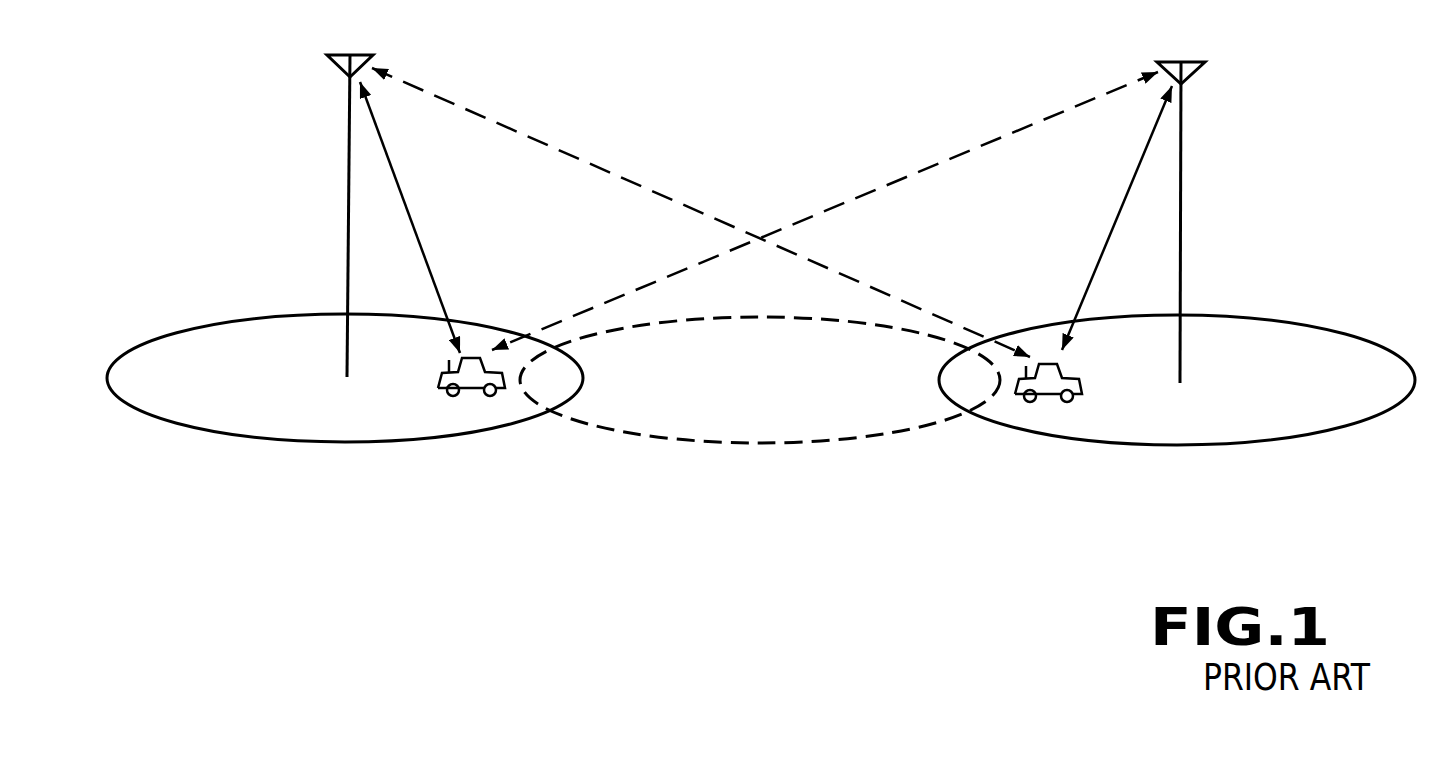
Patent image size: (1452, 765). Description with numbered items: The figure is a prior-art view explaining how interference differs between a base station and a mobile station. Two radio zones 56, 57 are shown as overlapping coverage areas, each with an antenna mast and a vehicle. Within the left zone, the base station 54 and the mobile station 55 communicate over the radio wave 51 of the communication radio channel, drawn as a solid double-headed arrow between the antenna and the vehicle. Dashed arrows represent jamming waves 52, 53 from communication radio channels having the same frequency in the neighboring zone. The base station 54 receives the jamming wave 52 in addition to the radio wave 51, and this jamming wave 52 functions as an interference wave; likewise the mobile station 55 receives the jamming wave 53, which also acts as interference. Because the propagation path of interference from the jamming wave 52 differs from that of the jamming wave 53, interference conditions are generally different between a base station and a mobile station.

The radio wave of communication radio channel 51 is at (422, 240).
The jamming wave 52 is at (602, 168).
The jamming wave 53 is at (910, 170).
The base station 54 is at (345, 193).
The mobile station 55 is at (473, 357).
The radio zone 56 is at (250, 440).
The radio zone 57 is at (1070, 440).